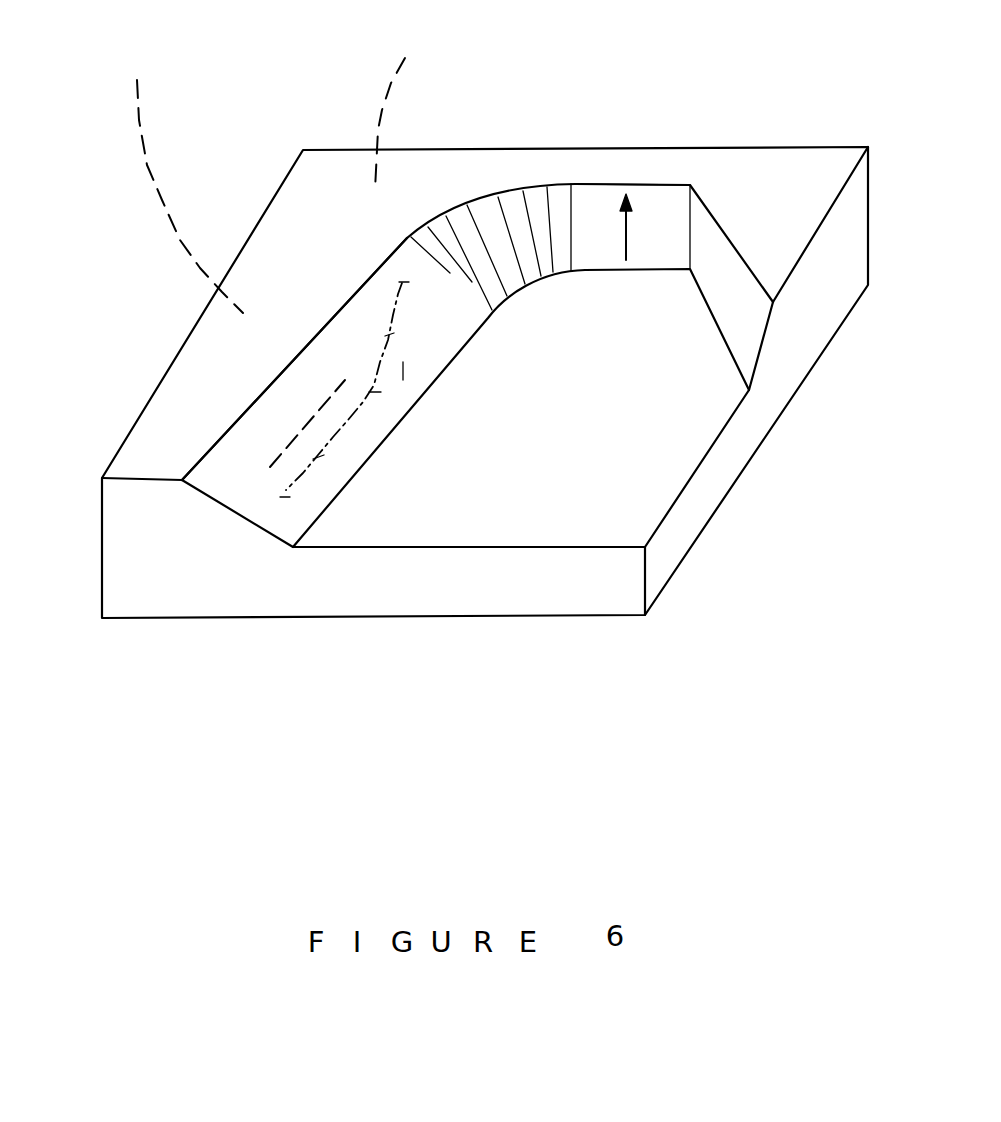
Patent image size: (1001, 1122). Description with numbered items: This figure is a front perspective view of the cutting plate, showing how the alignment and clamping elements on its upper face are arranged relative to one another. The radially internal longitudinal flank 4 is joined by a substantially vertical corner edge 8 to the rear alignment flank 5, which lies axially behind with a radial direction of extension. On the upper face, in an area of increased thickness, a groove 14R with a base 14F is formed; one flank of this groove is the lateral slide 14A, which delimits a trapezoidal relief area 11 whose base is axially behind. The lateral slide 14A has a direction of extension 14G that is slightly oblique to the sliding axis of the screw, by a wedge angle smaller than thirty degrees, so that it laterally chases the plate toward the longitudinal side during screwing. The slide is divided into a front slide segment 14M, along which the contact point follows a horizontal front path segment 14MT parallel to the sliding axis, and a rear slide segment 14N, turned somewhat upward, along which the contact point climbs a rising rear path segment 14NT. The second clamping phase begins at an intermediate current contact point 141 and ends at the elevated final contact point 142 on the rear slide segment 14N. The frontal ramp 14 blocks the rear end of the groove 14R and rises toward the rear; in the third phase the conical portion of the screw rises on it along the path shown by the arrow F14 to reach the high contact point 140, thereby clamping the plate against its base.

The radially internal longitudinal flank 4 is at (187, 172).
The rear alignment flank 5 is at (402, 110).
The corner edge 8 is at (303, 152).
The trapezoidal relief area 11 is at (305, 257).
The frontal ramp 14 is at (647, 207).
The high contact point 140 is at (629, 197).
The intermediate current contact point 141 is at (375, 392).
The final contact point 142 is at (403, 282).
The arrow F14 is at (628, 232).
The direction of extension of the lateral slide 14G is at (290, 450).
The lateral slide 14A is at (247, 488).
The front slide segment 14M is at (303, 498).
The front path segment 14MT is at (318, 457).
The rear slide segment 14N is at (403, 363).
The rear path segment 14NT is at (390, 333).
The groove 14R is at (572, 500).
The base of the groove 14F is at (517, 507).